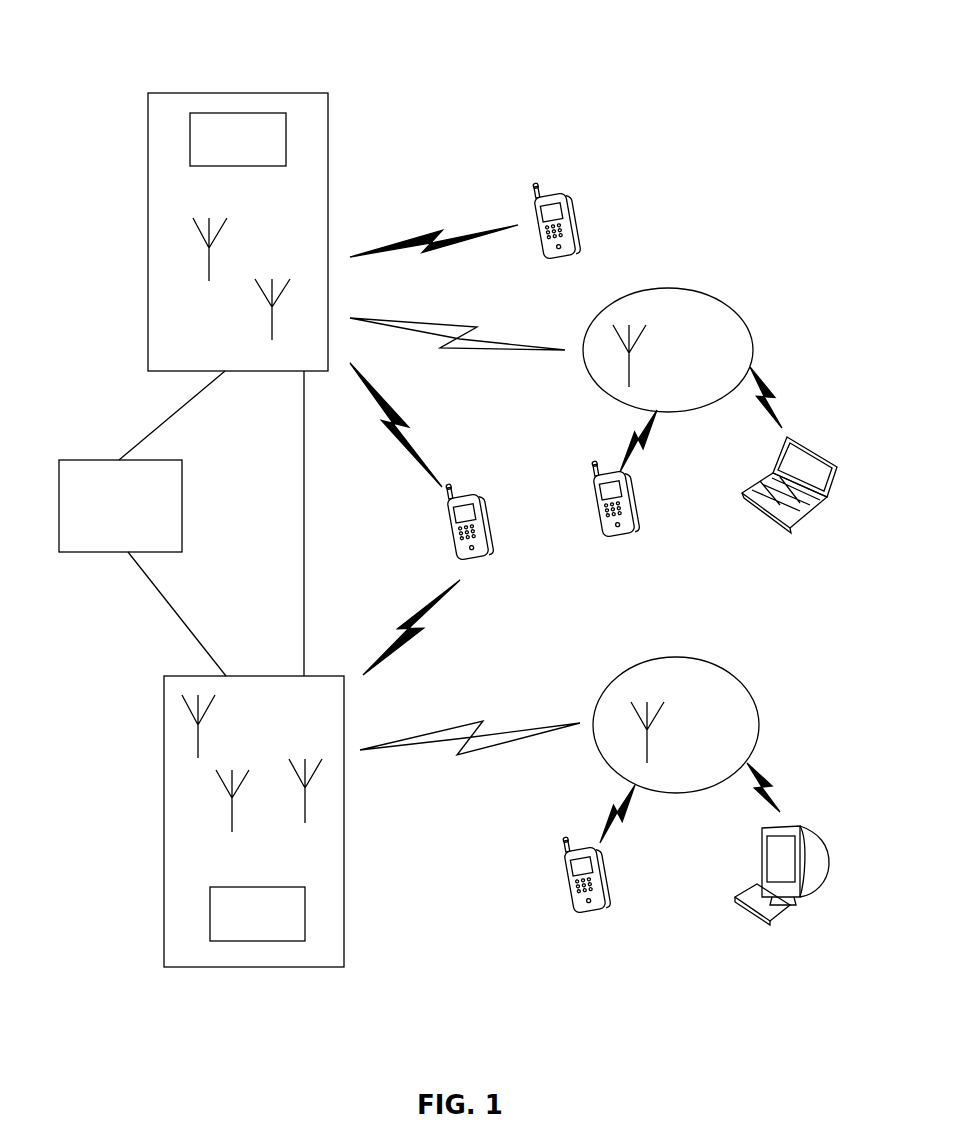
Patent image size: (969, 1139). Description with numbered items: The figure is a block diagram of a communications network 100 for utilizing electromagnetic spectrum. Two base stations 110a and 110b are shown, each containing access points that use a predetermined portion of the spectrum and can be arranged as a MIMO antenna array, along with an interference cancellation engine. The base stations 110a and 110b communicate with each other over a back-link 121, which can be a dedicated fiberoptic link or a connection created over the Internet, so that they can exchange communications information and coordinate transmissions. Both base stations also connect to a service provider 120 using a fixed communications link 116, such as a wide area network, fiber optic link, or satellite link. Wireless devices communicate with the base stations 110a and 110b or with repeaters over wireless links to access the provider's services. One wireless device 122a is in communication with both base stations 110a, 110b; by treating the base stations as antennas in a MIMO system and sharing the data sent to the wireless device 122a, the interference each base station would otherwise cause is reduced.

The communications network 100 is at (148, 40).
The first base station 110a is at (280, 93).
The second base station 110b is at (164, 765).
The backhaul link 116 is at (193, 635).
The service provider 120 is at (182, 503).
The back-link 121 is at (304, 520).
The wireless device 122a is at (473, 503).